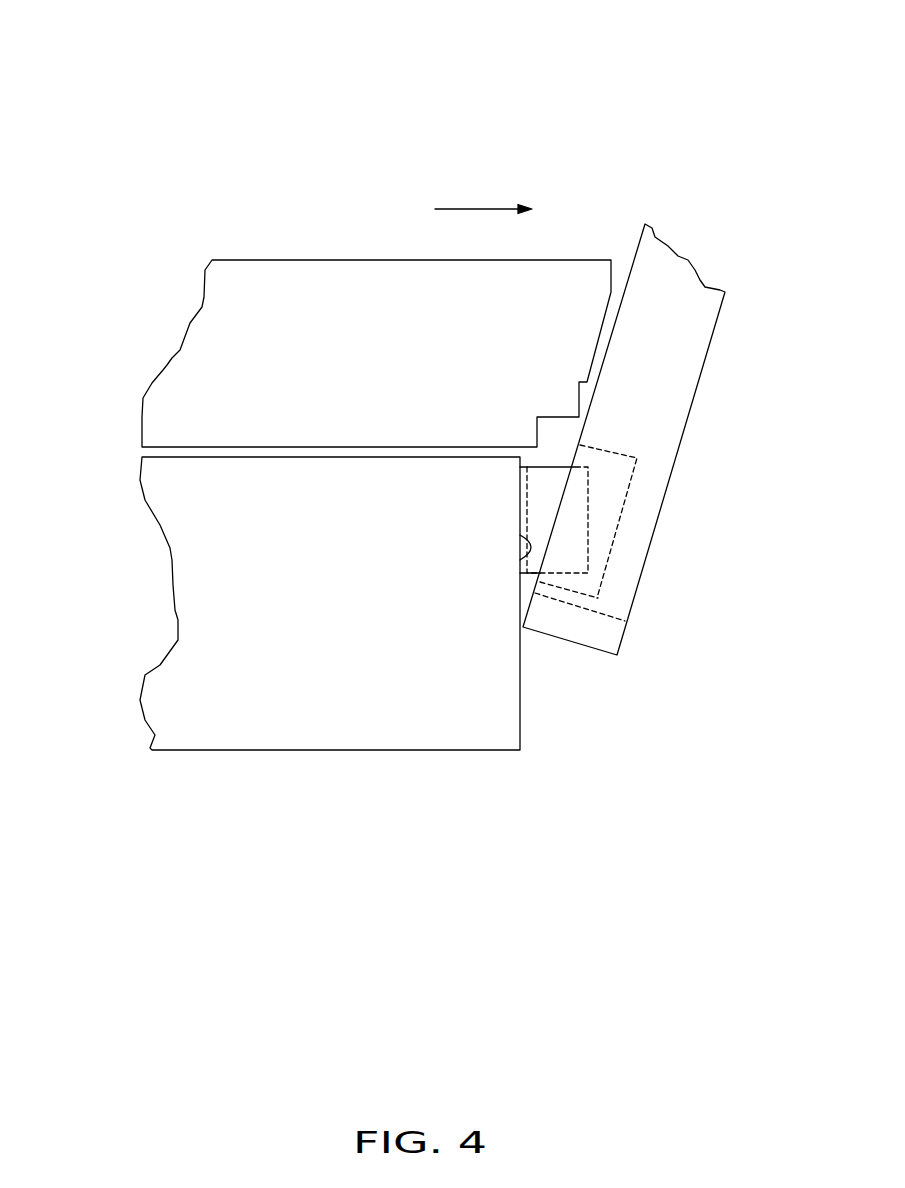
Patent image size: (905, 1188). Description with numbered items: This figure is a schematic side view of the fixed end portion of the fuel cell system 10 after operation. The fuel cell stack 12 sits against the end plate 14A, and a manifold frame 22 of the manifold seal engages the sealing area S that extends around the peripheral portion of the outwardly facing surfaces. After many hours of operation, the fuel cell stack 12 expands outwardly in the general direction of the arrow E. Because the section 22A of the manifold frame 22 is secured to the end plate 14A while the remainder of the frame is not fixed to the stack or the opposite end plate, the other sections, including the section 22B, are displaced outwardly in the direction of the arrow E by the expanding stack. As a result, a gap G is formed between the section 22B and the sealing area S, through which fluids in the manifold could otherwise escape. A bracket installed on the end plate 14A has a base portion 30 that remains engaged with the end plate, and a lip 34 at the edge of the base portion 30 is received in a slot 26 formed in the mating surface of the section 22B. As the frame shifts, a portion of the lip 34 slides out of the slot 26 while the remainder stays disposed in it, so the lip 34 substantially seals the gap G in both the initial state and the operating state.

The fuel cell system 10 is at (661, 100).
The fuel cell stack 12 is at (247, 322).
The end plate 14A is at (211, 552).
The manifold frame 22 is at (713, 259).
The section of the manifold frame 22A is at (582, 642).
The section of the manifold frame 22B is at (650, 350).
The gap G is at (575, 447).
The slot 26 is at (640, 489).
The base portion 30 is at (551, 476).
The lip 34 is at (547, 496).
The sealing area S is at (520, 566).
The arrow indicating direction of stack expansion E is at (483, 209).